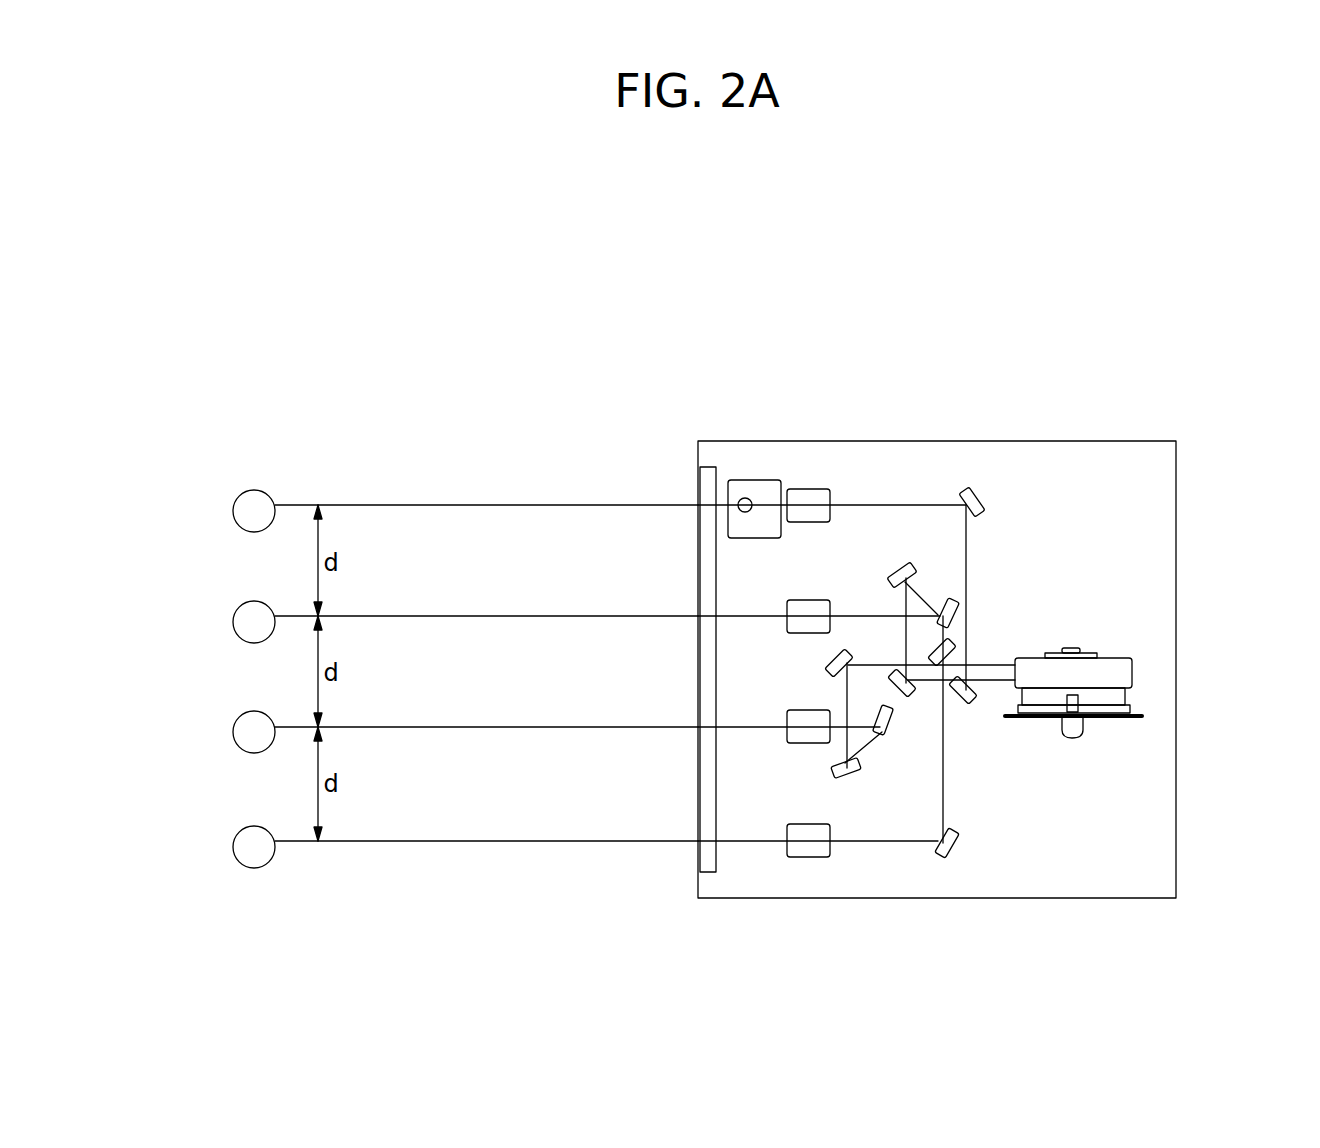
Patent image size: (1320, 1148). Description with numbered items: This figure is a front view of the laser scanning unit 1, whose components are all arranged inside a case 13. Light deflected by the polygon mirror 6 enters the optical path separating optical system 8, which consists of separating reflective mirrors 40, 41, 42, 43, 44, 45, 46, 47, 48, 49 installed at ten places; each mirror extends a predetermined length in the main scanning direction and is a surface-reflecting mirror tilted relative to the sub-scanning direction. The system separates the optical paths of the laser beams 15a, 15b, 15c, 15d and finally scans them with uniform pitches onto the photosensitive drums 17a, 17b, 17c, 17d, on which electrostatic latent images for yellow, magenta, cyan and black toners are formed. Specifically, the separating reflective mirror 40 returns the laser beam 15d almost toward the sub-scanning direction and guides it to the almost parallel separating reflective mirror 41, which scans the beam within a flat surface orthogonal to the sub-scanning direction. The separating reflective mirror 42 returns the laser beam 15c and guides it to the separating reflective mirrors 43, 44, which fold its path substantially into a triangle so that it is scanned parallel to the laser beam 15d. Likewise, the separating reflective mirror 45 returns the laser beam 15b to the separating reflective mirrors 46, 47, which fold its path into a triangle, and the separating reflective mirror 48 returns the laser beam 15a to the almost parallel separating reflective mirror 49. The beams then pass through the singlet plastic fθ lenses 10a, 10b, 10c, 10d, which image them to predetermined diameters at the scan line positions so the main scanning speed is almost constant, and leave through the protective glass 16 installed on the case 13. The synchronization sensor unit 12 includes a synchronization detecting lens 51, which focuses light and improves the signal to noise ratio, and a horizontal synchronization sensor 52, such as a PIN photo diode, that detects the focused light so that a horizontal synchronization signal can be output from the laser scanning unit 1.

The laser scanning unit 1 is at (1058, 417).
The polygon mirror 6 is at (1132, 670).
The optical path separating optical system 8 is at (907, 493).
The fθ lens 10a is at (805, 857).
The fθ lens 10b is at (802, 743).
The fθ lens 10c is at (805, 600).
The fθ lens 10d is at (808, 489).
The synchronization sensor unit 12 is at (645, 362).
The case 13 is at (1177, 792).
The laser beam 15a is at (405, 841).
The laser beam 15b is at (405, 727).
The laser beam 15c is at (405, 616).
The laser beam 15d is at (405, 505).
The protective glass 16 is at (702, 872).
The photosensitive drum 17a is at (232, 848).
The photosensitive drum 17b is at (232, 733).
The photosensitive drum 17c is at (232, 623).
The photosensitive drum 17d is at (232, 512).
The separating reflective mirror 40 is at (967, 705).
The separating reflective mirror 41 is at (975, 492).
The separating reflective mirror 42 is at (908, 695).
The separating reflective mirror 43 is at (897, 565).
The separating reflective mirror 44 is at (952, 600).
The separating reflective mirror 45 is at (830, 660).
The separating reflective mirror 46 is at (852, 778).
The separating reflective mirror 47 is at (887, 732).
The separating reflective mirror 48 is at (953, 647).
The separating reflective mirror 49 is at (958, 848).
The synchronization detecting lens 51 is at (740, 500).
The horizontal synchronization sensor 52 is at (755, 480).